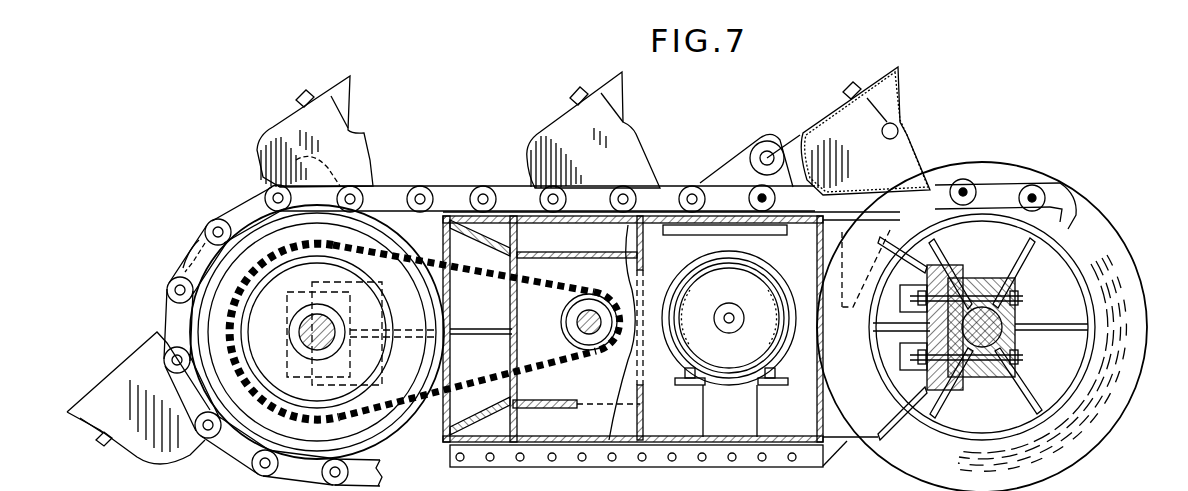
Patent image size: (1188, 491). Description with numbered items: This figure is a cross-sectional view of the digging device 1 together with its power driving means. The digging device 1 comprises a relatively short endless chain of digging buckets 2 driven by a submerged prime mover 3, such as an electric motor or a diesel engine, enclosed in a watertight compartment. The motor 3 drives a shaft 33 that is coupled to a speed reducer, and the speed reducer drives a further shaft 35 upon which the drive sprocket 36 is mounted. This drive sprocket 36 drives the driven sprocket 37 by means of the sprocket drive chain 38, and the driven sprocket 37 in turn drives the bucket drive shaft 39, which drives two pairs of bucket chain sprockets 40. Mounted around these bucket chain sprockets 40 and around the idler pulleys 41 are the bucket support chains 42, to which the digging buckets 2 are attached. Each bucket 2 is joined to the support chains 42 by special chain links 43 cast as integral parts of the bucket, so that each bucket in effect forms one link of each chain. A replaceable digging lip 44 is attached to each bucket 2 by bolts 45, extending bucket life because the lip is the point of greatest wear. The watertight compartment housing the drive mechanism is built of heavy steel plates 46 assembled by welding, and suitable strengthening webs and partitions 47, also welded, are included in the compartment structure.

The digging device 1 is at (412, 186).
The digging bucket 2 is at (268, 124).
The prime mover 3 is at (758, 282).
The shaft 33 is at (729, 312).
The shaft 35 is at (592, 310).
The drive sprocket 36 is at (563, 318).
The driven sprocket 37 is at (452, 300).
The sprocket drive chain 38 is at (505, 378).
The bucket drive shaft 39 is at (300, 333).
The bucket chain sprocket 40 is at (185, 253).
The idler pulley 41 is at (1065, 198).
The bucket support chain 42 is at (218, 219).
The chain link 43 is at (340, 187).
The replaceable digging lip 44 is at (356, 96).
The bolt 45 is at (300, 92).
The heavy steel plate 46 is at (648, 238).
The strengthening webs and partitions 47 is at (824, 346).